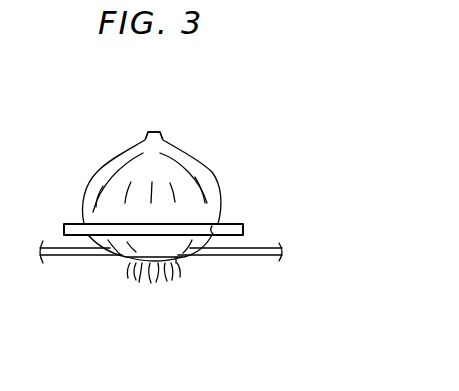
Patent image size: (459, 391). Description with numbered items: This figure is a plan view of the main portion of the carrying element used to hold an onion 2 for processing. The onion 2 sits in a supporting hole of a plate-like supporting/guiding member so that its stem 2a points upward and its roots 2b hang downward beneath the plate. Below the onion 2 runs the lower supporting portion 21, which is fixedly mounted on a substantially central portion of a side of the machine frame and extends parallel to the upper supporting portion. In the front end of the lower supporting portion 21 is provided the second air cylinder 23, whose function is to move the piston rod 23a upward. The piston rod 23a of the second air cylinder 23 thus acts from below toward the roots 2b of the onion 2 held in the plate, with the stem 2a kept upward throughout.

The onion 2 is at (97, 184).
The stem 2a is at (157, 153).
The roots 2b is at (161, 264).
The lower supporting portion 21 is at (267, 248).
The second air cylinder 23 is at (230, 232).
The piston rod 23a is at (214, 237).